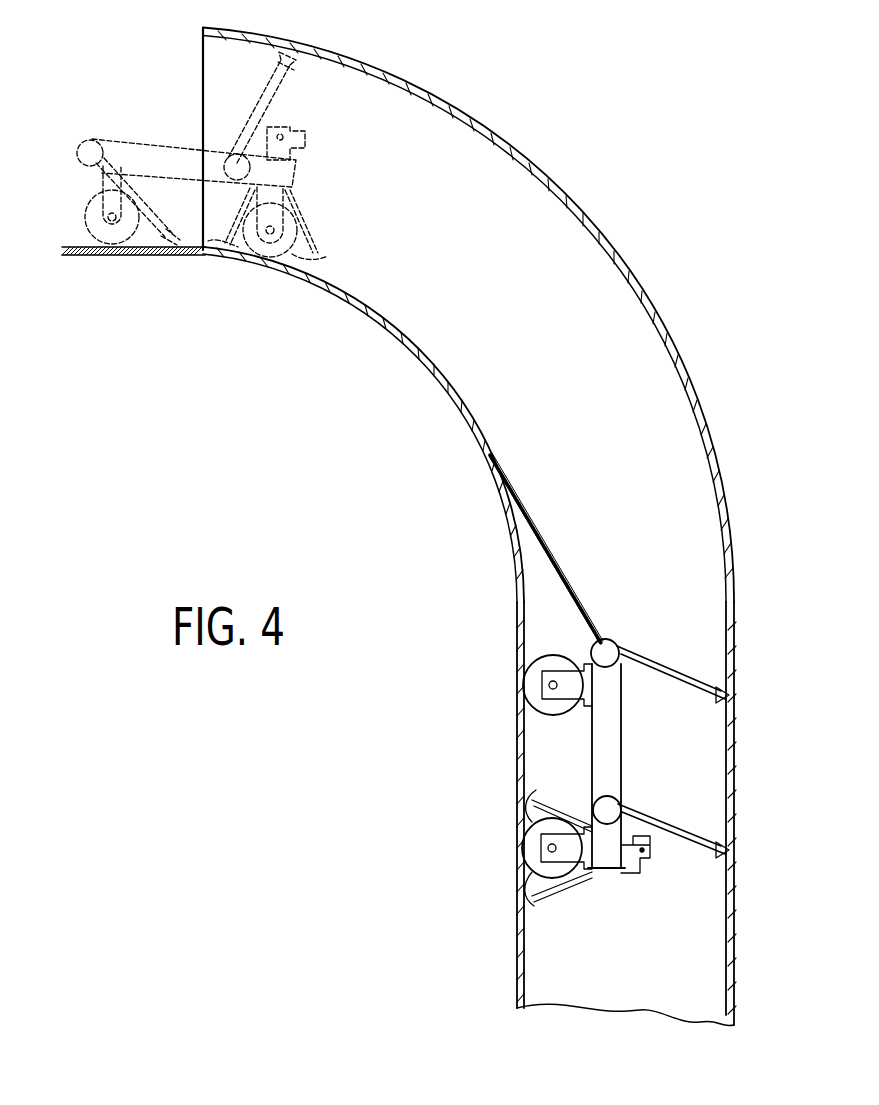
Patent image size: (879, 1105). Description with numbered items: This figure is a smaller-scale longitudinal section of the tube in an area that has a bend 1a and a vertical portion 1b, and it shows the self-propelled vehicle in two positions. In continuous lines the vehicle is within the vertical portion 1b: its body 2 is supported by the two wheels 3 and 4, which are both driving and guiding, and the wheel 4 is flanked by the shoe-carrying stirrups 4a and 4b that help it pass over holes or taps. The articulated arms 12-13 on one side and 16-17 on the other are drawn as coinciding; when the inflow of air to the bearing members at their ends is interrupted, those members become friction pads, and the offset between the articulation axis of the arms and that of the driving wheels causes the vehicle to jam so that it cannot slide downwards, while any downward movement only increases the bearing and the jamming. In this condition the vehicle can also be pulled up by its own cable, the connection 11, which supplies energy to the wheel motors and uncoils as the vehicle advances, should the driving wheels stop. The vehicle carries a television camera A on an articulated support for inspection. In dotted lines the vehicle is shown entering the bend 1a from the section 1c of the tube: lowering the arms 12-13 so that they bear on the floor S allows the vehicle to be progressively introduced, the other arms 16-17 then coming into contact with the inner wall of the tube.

The bend 1a is at (419, 354).
The vertical portion 1b is at (520, 975).
The section of tube 1c is at (203, 75).
The body 2 is at (185, 150).
The wheel 3 is at (541, 670).
The wheel 4 is at (540, 857).
The shoe-carrying stirrup 4a is at (536, 800).
The shoe-carrying stirrup 4b is at (536, 912).
The connection 11 is at (63, 150).
The articulated arms 12-13 is at (681, 682).
The articulated arms 16-17 is at (682, 840).
The television camera A is at (636, 875).
The floor S is at (165, 258).